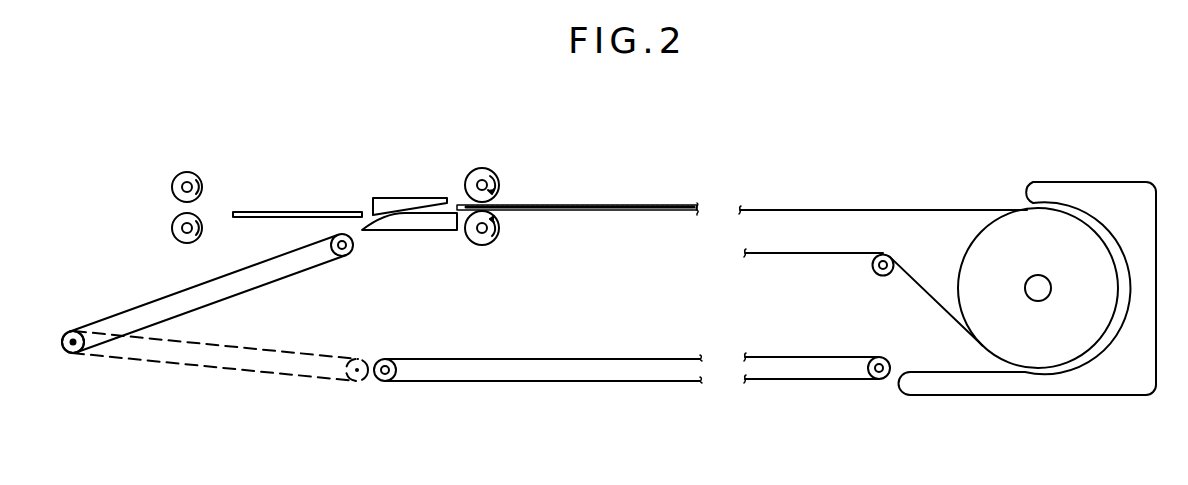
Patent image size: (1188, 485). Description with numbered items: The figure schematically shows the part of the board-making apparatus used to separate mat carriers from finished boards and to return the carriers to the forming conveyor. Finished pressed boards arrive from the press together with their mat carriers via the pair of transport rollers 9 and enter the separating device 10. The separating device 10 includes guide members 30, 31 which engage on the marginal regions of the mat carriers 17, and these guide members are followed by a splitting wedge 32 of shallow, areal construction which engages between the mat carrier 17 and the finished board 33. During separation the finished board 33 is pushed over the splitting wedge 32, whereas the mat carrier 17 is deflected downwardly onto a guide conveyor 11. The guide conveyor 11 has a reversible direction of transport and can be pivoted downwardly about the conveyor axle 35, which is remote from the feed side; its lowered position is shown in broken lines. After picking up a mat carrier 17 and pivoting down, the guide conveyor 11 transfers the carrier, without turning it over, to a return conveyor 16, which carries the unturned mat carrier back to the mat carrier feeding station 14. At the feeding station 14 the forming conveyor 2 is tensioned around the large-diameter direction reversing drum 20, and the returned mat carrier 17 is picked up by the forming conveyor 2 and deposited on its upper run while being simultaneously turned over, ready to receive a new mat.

The forming conveyor 2 is at (797, 210).
The pair of transport rollers 9 is at (495, 173).
The separating device 10 is at (362, 184).
The guide conveyor 11 is at (230, 298).
The mat carrier feeding station 14 is at (1029, 166).
The return conveyor 16 is at (578, 381).
The mat carrier 17 is at (457, 203).
The direction reversing drum 20 is at (977, 270).
The guide member 30 is at (397, 199).
The guide member 31 is at (398, 230).
The splitting wedge 32 is at (262, 218).
The finished board 33 is at (583, 205).
The conveyor axle 35 is at (82, 352).